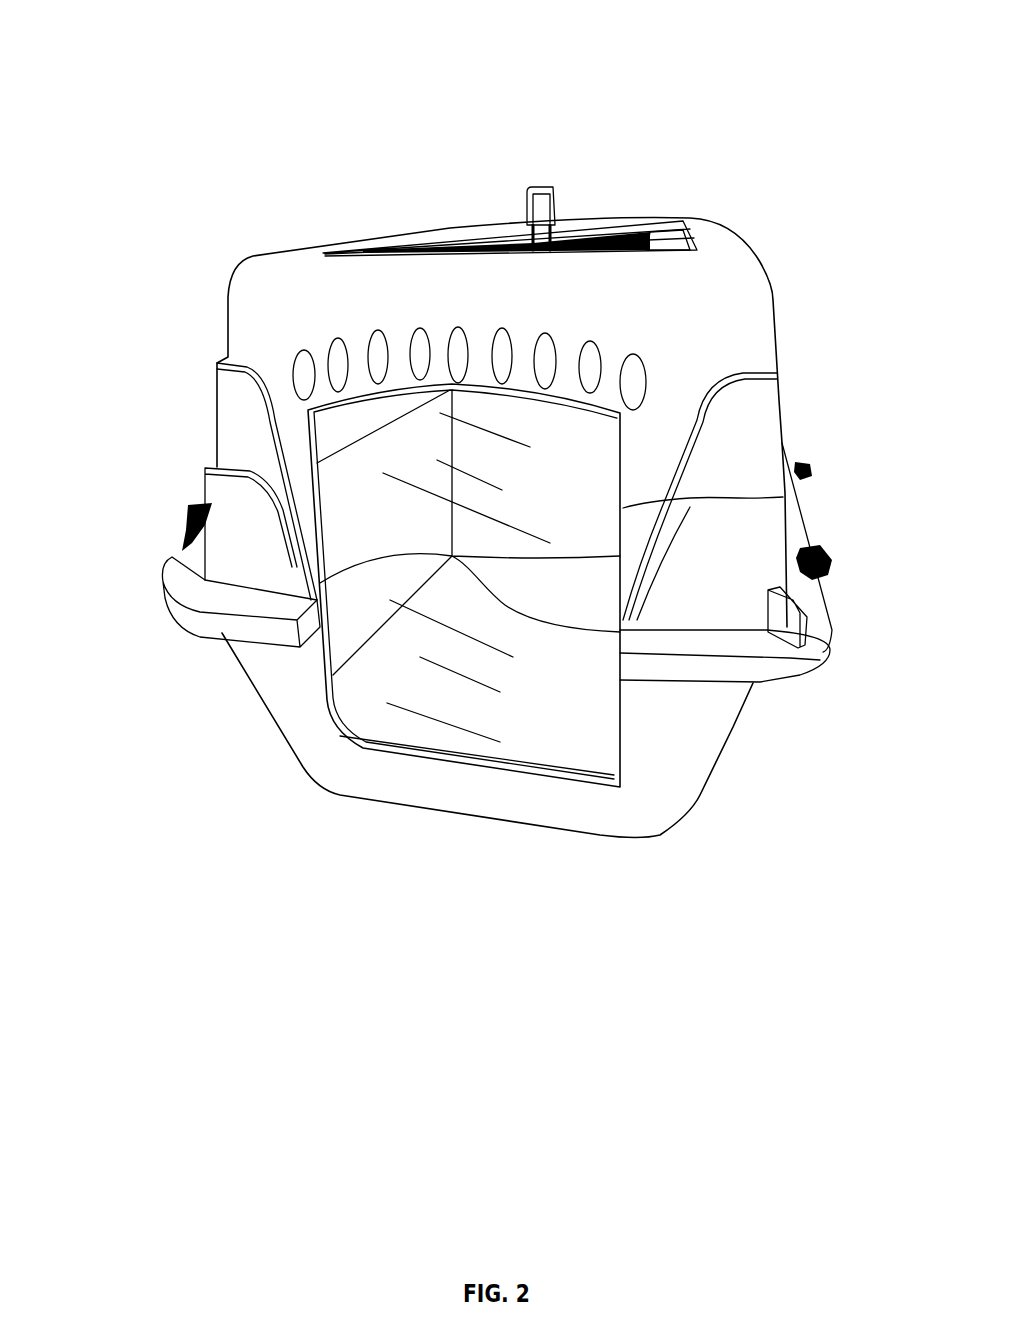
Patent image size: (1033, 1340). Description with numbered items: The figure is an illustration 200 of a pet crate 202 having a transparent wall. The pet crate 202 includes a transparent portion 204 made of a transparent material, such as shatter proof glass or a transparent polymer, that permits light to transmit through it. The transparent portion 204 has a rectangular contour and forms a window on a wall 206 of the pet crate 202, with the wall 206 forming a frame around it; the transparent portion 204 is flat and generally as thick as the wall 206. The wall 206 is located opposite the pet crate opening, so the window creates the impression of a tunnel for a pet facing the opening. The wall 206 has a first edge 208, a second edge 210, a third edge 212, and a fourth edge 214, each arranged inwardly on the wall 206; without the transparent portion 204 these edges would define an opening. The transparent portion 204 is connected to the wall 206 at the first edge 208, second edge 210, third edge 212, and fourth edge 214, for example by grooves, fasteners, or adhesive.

The illustration 200 is at (131, 71).
The pet crate 202 is at (253, 287).
The transparent portion 204 is at (350, 485).
The wall 206 is at (300, 690).
The first edge 208 is at (453, 392).
The second edge 210 is at (623, 508).
The third edge 212 is at (495, 775).
The fourth edge 214 is at (312, 497).